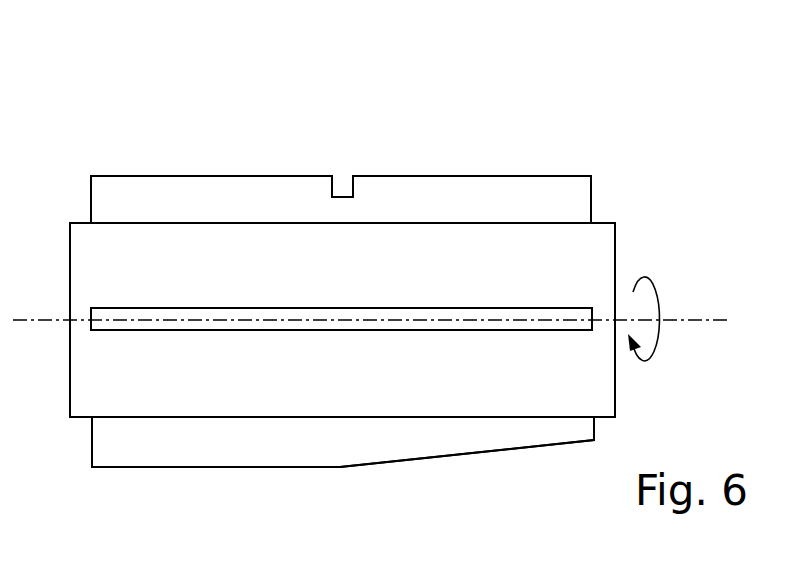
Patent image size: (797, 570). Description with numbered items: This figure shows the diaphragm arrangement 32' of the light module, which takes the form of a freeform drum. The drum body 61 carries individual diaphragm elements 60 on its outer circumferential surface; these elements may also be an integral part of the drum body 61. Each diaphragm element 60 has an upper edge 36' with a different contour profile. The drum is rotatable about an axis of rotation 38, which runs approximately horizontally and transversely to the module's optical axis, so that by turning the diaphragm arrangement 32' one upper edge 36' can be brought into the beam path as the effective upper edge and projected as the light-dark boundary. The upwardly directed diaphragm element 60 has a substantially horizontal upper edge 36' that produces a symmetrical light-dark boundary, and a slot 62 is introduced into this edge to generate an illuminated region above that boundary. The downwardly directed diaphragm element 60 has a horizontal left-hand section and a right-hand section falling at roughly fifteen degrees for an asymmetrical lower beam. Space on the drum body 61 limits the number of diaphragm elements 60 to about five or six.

The diaphragm arrangement 32' is at (216, 246).
The upper edge 36' is at (467, 315).
The axis of rotation 38 is at (683, 318).
The diaphragm element 60 is at (536, 189).
The drum body 61 is at (600, 260).
The slot 62 is at (348, 177).